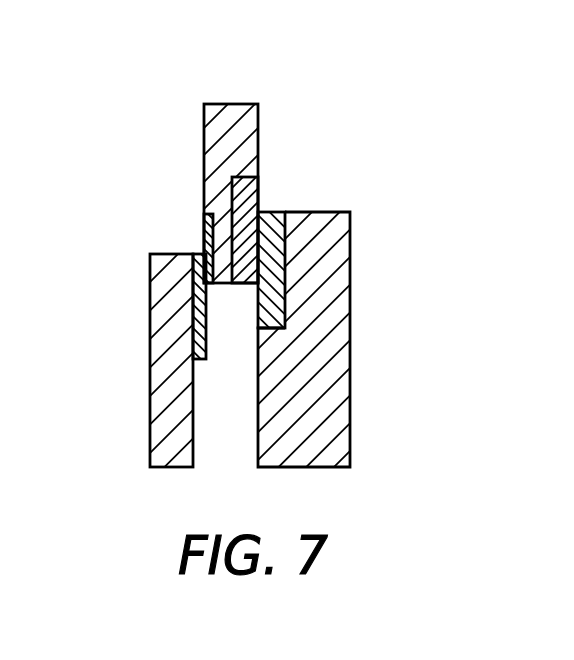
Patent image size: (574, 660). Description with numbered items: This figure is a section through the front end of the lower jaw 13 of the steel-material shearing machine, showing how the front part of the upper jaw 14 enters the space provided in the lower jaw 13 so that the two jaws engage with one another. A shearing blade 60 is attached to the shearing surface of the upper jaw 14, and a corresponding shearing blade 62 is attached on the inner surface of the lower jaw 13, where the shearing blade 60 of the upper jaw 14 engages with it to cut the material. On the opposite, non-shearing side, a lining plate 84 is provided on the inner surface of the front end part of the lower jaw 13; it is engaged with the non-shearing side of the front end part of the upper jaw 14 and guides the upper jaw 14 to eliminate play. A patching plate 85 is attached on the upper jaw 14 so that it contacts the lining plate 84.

The lower jaw 13 is at (163, 409).
The upper jaw 14 is at (230, 117).
The shearing blade 60 is at (253, 181).
The shearing blade 62 is at (281, 213).
The lining plate 84 is at (200, 253).
The patching plate 85 is at (206, 232).